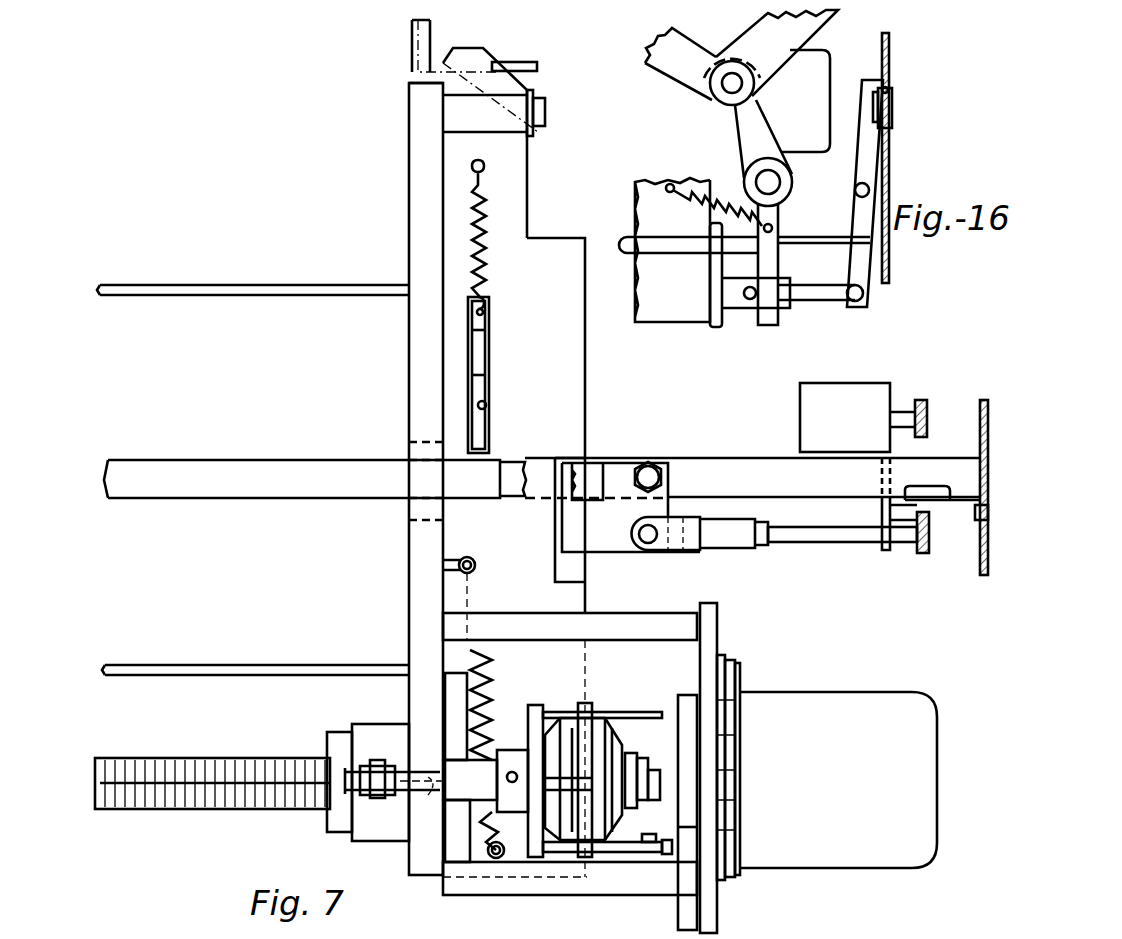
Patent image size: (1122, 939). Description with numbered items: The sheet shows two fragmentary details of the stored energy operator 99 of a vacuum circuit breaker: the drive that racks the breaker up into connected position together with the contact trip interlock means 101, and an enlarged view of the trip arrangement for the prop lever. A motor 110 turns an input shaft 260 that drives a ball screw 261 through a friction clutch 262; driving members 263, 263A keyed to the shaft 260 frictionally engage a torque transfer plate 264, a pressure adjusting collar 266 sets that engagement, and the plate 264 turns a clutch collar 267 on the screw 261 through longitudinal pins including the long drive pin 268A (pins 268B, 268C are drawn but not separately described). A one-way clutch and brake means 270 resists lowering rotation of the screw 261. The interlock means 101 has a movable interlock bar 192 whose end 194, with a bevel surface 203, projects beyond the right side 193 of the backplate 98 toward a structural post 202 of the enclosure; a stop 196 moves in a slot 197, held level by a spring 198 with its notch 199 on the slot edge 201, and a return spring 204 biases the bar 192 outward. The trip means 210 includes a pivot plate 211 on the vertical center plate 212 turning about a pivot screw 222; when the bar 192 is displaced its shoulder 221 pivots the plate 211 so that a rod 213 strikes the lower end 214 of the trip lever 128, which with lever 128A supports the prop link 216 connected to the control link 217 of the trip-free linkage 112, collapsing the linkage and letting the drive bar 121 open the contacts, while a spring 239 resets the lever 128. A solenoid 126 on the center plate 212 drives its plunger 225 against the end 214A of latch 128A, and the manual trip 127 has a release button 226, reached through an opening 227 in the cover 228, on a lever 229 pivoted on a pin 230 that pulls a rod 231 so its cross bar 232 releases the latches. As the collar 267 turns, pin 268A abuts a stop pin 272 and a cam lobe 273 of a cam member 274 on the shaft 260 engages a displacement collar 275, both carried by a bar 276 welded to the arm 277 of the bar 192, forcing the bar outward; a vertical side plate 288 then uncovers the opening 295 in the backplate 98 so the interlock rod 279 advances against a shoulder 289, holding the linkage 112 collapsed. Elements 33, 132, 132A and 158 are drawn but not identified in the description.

In FIG. 7, the upright post 33 is at (412, 37).
In FIG. 7, the backplate 98 is at (409, 361).
In FIG. 7, the stored energy operator 99 is at (782, 612).
In FIG. 7, the contact trip interlock means 101 is at (646, 401).
In FIG. 7, the motor 110 is at (872, 692).
In FIG. 16, the trip-free linkage 112 is at (680, 96).
In FIG. 7, the drive bar 121 is at (598, 472).
In FIG. 7, the solenoid 126 is at (840, 383).
In FIG. 7, the manual trip 127 is at (976, 536).
In FIG. 16, the manual trip 127 is at (958, 105).
In FIG. 7, the trip lever 128 is at (922, 555).
In FIG. 16, the trip lever 128 is at (738, 134).
In FIG. 7, the trip lever 128A is at (978, 379).
In FIG. 7, the lower rail 132 is at (150, 676).
In FIG. 7, the upper rail 132A is at (240, 288).
In FIG. 7, the main shaft 158 is at (248, 460).
In FIG. 7, the interlock bar 192 is at (586, 362).
In FIG. 7, the right side of backplate 193 is at (409, 83).
In FIG. 7, the end of interlock bar 194 is at (488, 48).
In FIG. 7, the stop 196 is at (490, 341).
In FIG. 7, the slot 197 is at (486, 405).
In FIG. 7, the spring 198 is at (490, 266).
In FIG. 7, the notch 199 is at (484, 300).
In FIG. 7, the right-hand edge of slot 201 is at (486, 312).
In FIG. 7, the structural post 202 is at (540, 62).
In FIG. 7, the bevel surface 203 is at (446, 58).
In FIG. 7, the return spring 204 is at (478, 660).
In FIG. 7, the trip means 210 is at (758, 583).
In FIG. 7, the pivot plate 211 is at (606, 552).
In FIG. 7, the center plate 212 is at (752, 458).
In FIG. 16, the center plate 212 is at (646, 175).
In FIG. 7, the rod 213 is at (798, 542).
In FIG. 16, the rod 213 is at (658, 238).
In FIG. 7, the lower end of trip lever 214 is at (899, 504).
In FIG. 16, the lower end of trip lever 214 is at (766, 326).
In FIG. 7, the end of trip latch 214A is at (927, 437).
In FIG. 16, the prop link 216 is at (645, 66).
In FIG. 16, the control link 217 is at (755, 48).
In FIG. 7, the shoulder 221 is at (582, 462).
In FIG. 7, the pivot screw 222 is at (652, 475).
In FIG. 7, the plunger 225 is at (890, 415).
In FIG. 16, the release button 226 is at (892, 118).
In FIG. 16, the opening 227 is at (893, 92).
In FIG. 16, the cover 228 is at (888, 262).
In FIG. 16, the lever 229 is at (868, 158).
In FIG. 16, the pin 230 is at (855, 184).
In FIG. 7, the rod 231 is at (945, 472).
In FIG. 16, the rod 231 is at (814, 300).
In FIG. 16, the cross bar 232 is at (746, 302).
In FIG. 16, the spring 239 is at (720, 192).
In FIG. 7, the input shaft 260 is at (660, 772).
In FIG. 7, the ball screw 261 is at (208, 760).
In FIG. 7, the friction clutch 262 is at (655, 695).
In FIG. 7, the driving member 263 is at (618, 810).
In FIG. 7, the driving member 263A is at (565, 720).
In FIG. 7, the torque transfer plate 264 is at (592, 704).
In FIG. 7, the pressure adjusting collar 266 is at (636, 755).
In FIG. 7, the clutch collar 267 is at (535, 704).
In FIG. 7, the long drive pin 268A is at (655, 712).
In FIG. 7, the block 268B is at (548, 778).
In FIG. 7, the lower bar 268C is at (625, 853).
In FIG. 7, the one-way clutch and brake means 270 is at (345, 733).
In FIG. 7, the stop pin 272 is at (652, 855).
In FIG. 7, the cam lobe 273 is at (700, 695).
In FIG. 7, the cam member 274 is at (690, 757).
In FIG. 7, the displacement collar 275 is at (700, 913).
In FIG. 7, the bar 276 is at (565, 890).
In FIG. 7, the upwardly extending arm 277 is at (500, 878).
In FIG. 7, the interlock rod 279 is at (330, 805).
In FIG. 7, the vertical side plate 288 is at (458, 842).
In FIG. 7, the shoulder 289 is at (432, 740).
In FIG. 7, the opening 295 is at (430, 795).